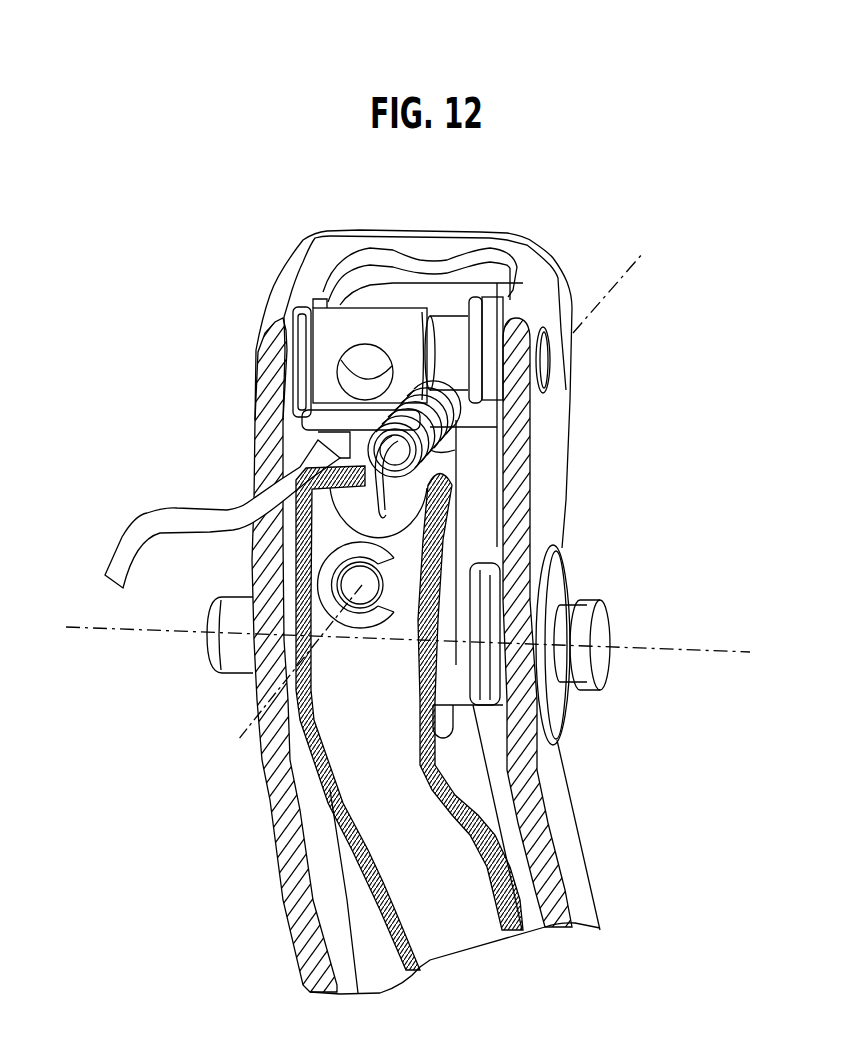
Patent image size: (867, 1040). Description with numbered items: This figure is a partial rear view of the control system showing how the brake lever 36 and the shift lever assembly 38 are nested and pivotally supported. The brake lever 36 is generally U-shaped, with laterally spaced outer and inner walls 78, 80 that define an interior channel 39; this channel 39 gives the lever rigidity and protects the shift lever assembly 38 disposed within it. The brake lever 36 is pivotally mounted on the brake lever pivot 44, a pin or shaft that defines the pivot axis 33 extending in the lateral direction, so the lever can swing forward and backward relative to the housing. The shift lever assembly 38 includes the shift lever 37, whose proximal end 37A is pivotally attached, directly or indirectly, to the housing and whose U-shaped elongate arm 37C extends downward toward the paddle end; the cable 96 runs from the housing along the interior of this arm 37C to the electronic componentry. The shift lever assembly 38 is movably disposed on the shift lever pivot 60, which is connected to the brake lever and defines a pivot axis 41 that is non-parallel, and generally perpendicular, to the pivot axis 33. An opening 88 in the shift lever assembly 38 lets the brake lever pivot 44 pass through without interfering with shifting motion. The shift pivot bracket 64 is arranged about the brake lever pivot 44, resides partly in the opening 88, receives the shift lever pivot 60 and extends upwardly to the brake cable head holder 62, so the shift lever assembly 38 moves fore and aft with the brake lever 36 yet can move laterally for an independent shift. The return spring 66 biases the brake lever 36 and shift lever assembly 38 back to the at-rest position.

The pivot axis 33 is at (678, 648).
The brake lever 36 is at (553, 476).
The shift lever 37 is at (368, 881).
The proximal end 37A is at (335, 747).
The elongate arm 37C is at (460, 947).
The shift lever assembly 38 is at (492, 837).
The interior channel 39 is at (330, 804).
The pivot axis 41 is at (625, 278).
The brake lever pivot 44 is at (603, 613).
The shift lever pivot 60 is at (321, 571).
The brake cable head holder 62 is at (390, 313).
The shift pivot bracket 64 is at (485, 512).
The return spring 66 is at (443, 428).
The outer wall 78 is at (562, 364).
The inner wall 80 is at (258, 366).
The opening 88 is at (453, 723).
The cable 96 is at (188, 508).